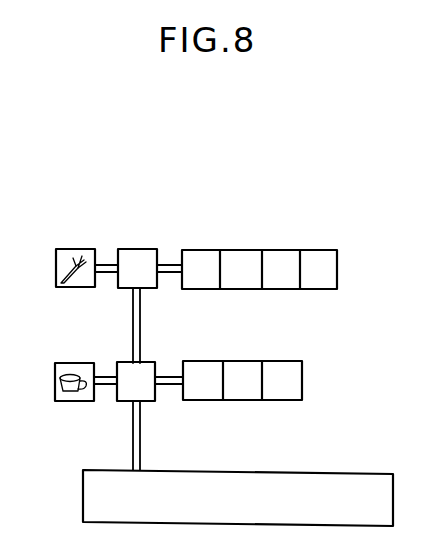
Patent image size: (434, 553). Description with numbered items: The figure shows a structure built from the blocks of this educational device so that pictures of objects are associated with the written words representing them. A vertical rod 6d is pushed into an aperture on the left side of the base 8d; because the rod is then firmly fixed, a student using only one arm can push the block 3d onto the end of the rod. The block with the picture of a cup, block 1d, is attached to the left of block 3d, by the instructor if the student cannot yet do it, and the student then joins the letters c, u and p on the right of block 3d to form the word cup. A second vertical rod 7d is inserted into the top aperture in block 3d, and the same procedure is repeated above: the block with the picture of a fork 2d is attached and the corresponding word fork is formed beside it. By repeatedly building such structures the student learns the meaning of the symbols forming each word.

The block with the picture of a cup 1d is at (52, 398).
The block with the picture of a fork 2d is at (48, 258).
The block 3d is at (145, 402).
The vertical rod 6d is at (129, 452).
The vertical rod 7d is at (141, 305).
The base 8d is at (355, 463).